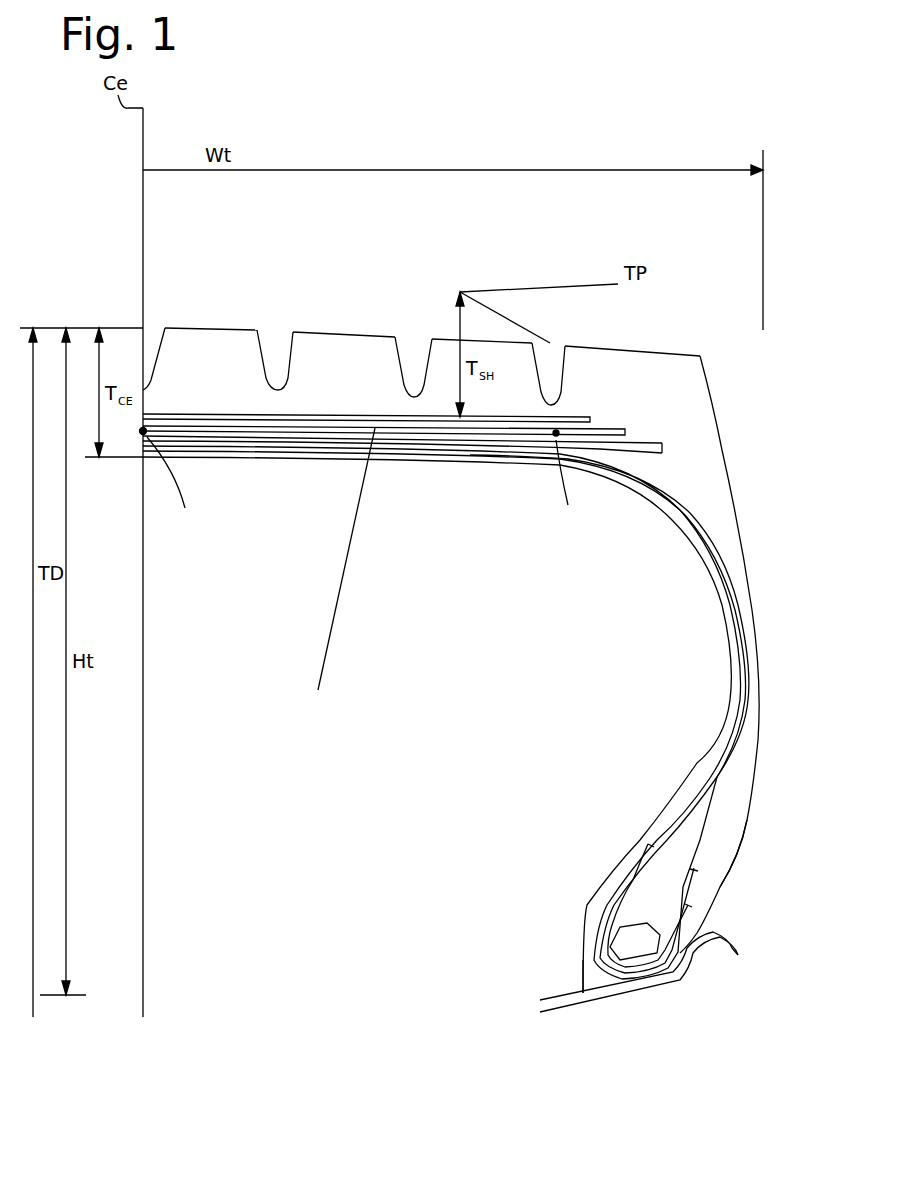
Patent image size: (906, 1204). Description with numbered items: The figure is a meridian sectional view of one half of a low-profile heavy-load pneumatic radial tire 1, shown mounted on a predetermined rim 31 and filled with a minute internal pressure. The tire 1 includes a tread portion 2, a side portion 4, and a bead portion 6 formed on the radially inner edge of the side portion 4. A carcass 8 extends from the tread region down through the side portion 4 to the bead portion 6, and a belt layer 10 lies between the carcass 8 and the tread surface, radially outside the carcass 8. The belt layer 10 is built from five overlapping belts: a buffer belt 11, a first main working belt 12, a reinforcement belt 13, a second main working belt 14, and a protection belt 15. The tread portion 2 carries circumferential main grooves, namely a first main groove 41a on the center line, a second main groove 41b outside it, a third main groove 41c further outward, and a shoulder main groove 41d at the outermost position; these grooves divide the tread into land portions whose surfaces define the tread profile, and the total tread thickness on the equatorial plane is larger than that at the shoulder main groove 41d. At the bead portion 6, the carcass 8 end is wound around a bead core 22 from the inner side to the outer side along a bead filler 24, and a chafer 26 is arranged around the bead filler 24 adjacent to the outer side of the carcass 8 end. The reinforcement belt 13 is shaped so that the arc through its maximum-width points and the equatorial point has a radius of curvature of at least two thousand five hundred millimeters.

The pneumatic tire 1 is at (703, 295).
The tread portion 2 is at (215, 345).
The side portion 4 is at (760, 635).
The bead portion 6 is at (725, 850).
The carcass 8 is at (693, 508).
The belt layer 10 is at (773, 332).
The buffer belt 11 is at (680, 505).
The first main working belt 12 is at (672, 486).
The reinforcement belt 13 is at (662, 452).
The second main working belt 14 is at (625, 432).
The protection belt 15 is at (590, 418).
The bead core 22 is at (627, 930).
The bead filler 24 is at (643, 893).
The chafer 26 is at (588, 970).
The rim 31 is at (655, 1000).
The first main groove 41a is at (150, 326).
The second main groove 41b is at (280, 326).
The third main groove 41c is at (415, 326).
The shoulder main groove 41d is at (550, 334).